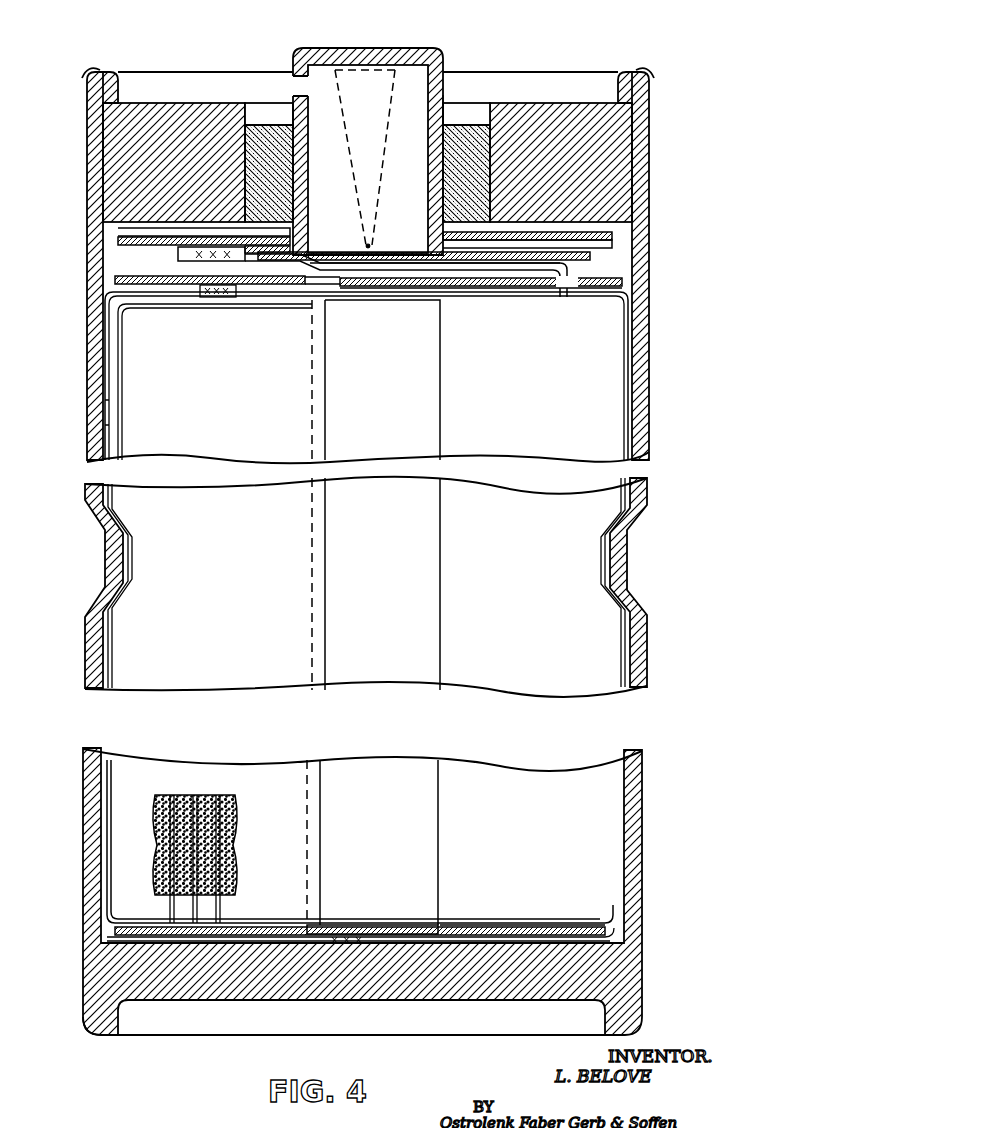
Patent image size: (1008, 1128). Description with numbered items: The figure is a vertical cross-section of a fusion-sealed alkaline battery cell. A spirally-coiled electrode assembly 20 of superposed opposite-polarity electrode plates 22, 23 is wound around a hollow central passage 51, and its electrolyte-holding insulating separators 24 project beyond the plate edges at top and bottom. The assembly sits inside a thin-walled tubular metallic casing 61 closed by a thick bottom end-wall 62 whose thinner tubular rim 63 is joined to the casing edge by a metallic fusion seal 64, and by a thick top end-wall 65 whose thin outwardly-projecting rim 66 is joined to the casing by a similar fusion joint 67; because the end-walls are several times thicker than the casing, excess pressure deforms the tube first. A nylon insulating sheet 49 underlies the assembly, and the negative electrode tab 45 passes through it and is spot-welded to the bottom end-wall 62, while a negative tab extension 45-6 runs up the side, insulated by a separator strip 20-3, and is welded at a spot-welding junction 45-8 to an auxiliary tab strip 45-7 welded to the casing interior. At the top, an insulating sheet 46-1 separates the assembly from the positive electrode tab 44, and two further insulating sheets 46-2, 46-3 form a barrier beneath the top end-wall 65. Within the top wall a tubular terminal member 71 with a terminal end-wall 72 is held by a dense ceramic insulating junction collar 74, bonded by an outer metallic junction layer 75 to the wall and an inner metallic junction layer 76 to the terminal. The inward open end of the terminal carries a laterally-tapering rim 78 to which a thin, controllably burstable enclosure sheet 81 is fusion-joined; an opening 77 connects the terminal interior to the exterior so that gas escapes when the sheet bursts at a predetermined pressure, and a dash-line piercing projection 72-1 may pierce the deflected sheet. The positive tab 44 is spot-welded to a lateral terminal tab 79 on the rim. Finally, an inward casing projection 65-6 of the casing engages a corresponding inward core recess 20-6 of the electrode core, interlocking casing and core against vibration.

The spirally-coiled electrode assembly 20 is at (610, 384).
The insulating separator strip 20-3 is at (122, 383).
The inward core recess 20-6 is at (132, 550).
The positive electrode plate 22 is at (215, 797).
The negative electrode plate 23 is at (187, 830).
The insulating separator 24 is at (428, 298).
The positive electrode tab 44 is at (378, 262).
The negative electrode tab 45 is at (542, 923).
The negative tab extension 45-6 is at (108, 415).
The auxiliary tab strip 45-7 is at (104, 380).
The spot-welding junction 45-8 is at (208, 298).
The insulating sheet 46-1 is at (616, 283).
The insulating sheet 46-2 is at (616, 237).
The insulating sheet 46-3 is at (118, 240).
The insulating sheet 49 is at (513, 903).
The hollow central passage 51 is at (373, 640).
The tubular metallic casing 61 is at (640, 427).
The bottom end-wall 62 is at (510, 990).
The tubular rim 63 is at (118, 1012).
The metallic fusion seal 64 is at (98, 1037).
The top end-wall 65 is at (532, 127).
The inward casing projection 65-6 is at (107, 550).
The outwardly-projecting rim 66 is at (612, 83).
The metallic fusion joint 67 is at (82, 78).
The tubular terminal member 71 is at (440, 97).
The terminal end-wall 72 is at (382, 60).
The piercing projection 72-1 is at (358, 165).
The insulating junction collar 74 is at (262, 136).
The outer metallic junction layer 75 is at (228, 150).
The inner metallic junction layer 76 is at (276, 128).
The opening 77 is at (312, 72).
The laterally-tapering rim 78 is at (478, 263).
The lateral terminal tab 79 is at (178, 254).
The burstable enclosure sheet 81 is at (386, 256).